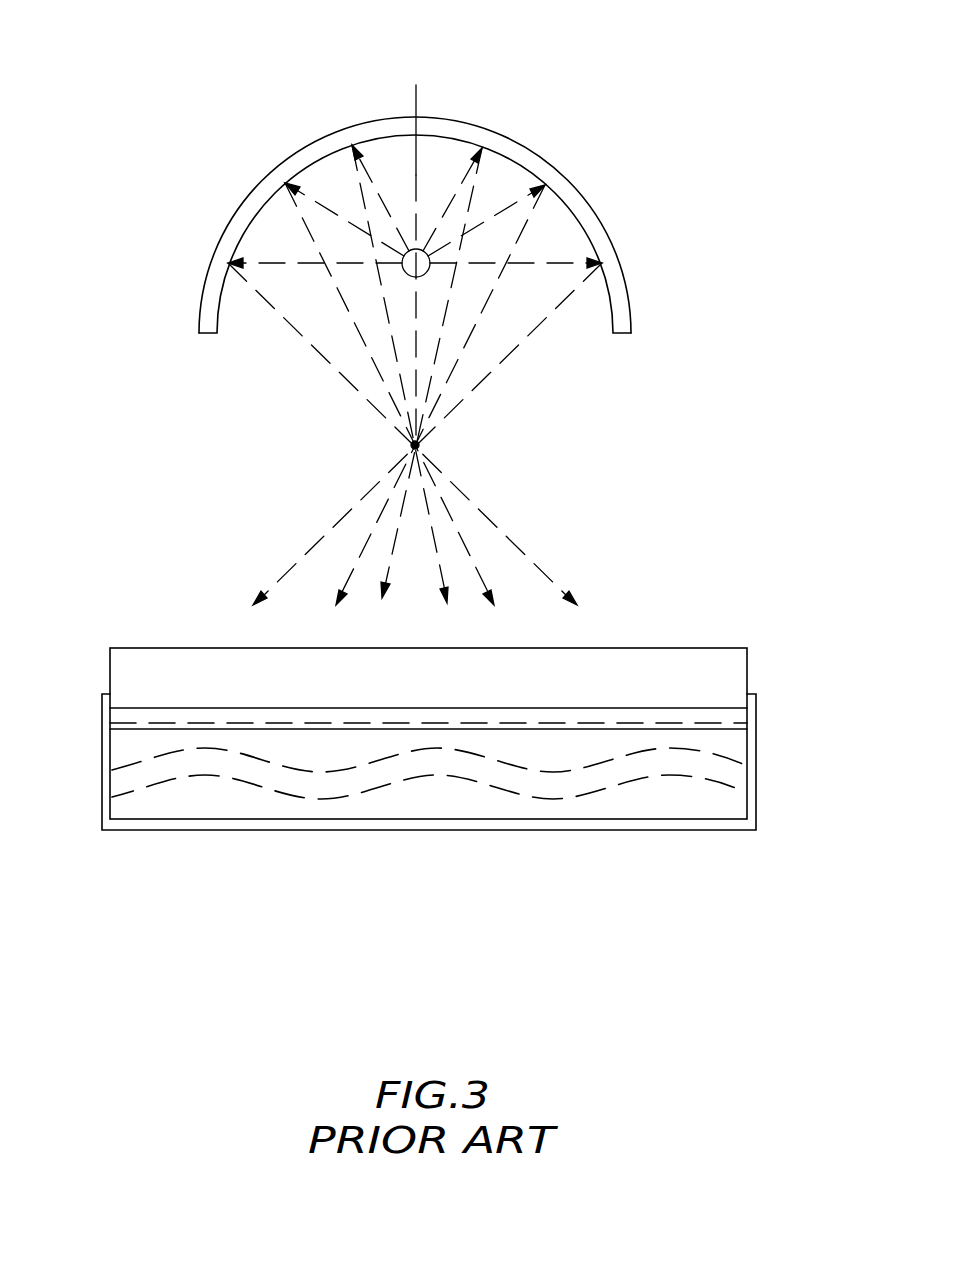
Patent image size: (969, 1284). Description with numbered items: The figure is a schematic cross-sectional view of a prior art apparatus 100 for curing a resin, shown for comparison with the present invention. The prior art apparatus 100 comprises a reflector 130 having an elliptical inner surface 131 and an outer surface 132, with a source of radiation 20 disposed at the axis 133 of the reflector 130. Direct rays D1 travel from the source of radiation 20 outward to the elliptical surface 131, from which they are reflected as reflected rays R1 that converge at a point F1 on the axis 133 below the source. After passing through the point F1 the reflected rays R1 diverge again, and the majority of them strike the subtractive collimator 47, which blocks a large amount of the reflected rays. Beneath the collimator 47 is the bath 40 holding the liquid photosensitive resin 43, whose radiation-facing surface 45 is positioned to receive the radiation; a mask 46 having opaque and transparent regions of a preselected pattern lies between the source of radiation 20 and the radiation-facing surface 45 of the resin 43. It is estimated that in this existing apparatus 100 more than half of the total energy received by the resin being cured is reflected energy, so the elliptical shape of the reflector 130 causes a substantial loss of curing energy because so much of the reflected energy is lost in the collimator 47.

The prior art apparatus 100 is at (227, 78).
The axis of the reflector 133 is at (417, 85).
The reflector 130 is at (602, 240).
The reflector outer surface 132 is at (547, 157).
The elliptical inner surface 131 is at (612, 293).
The source of radiation 20 is at (420, 277).
The direct light rays D1 is at (383, 200).
The reflected light rays R1 is at (285, 575).
The convergence point F1 is at (410, 445).
The subtractive collimator 47 is at (683, 672).
The bath 40 is at (752, 783).
The radiation-facing surface 45 is at (200, 728).
The mask 46 is at (290, 722).
The photosensitive resin 43 is at (385, 805).